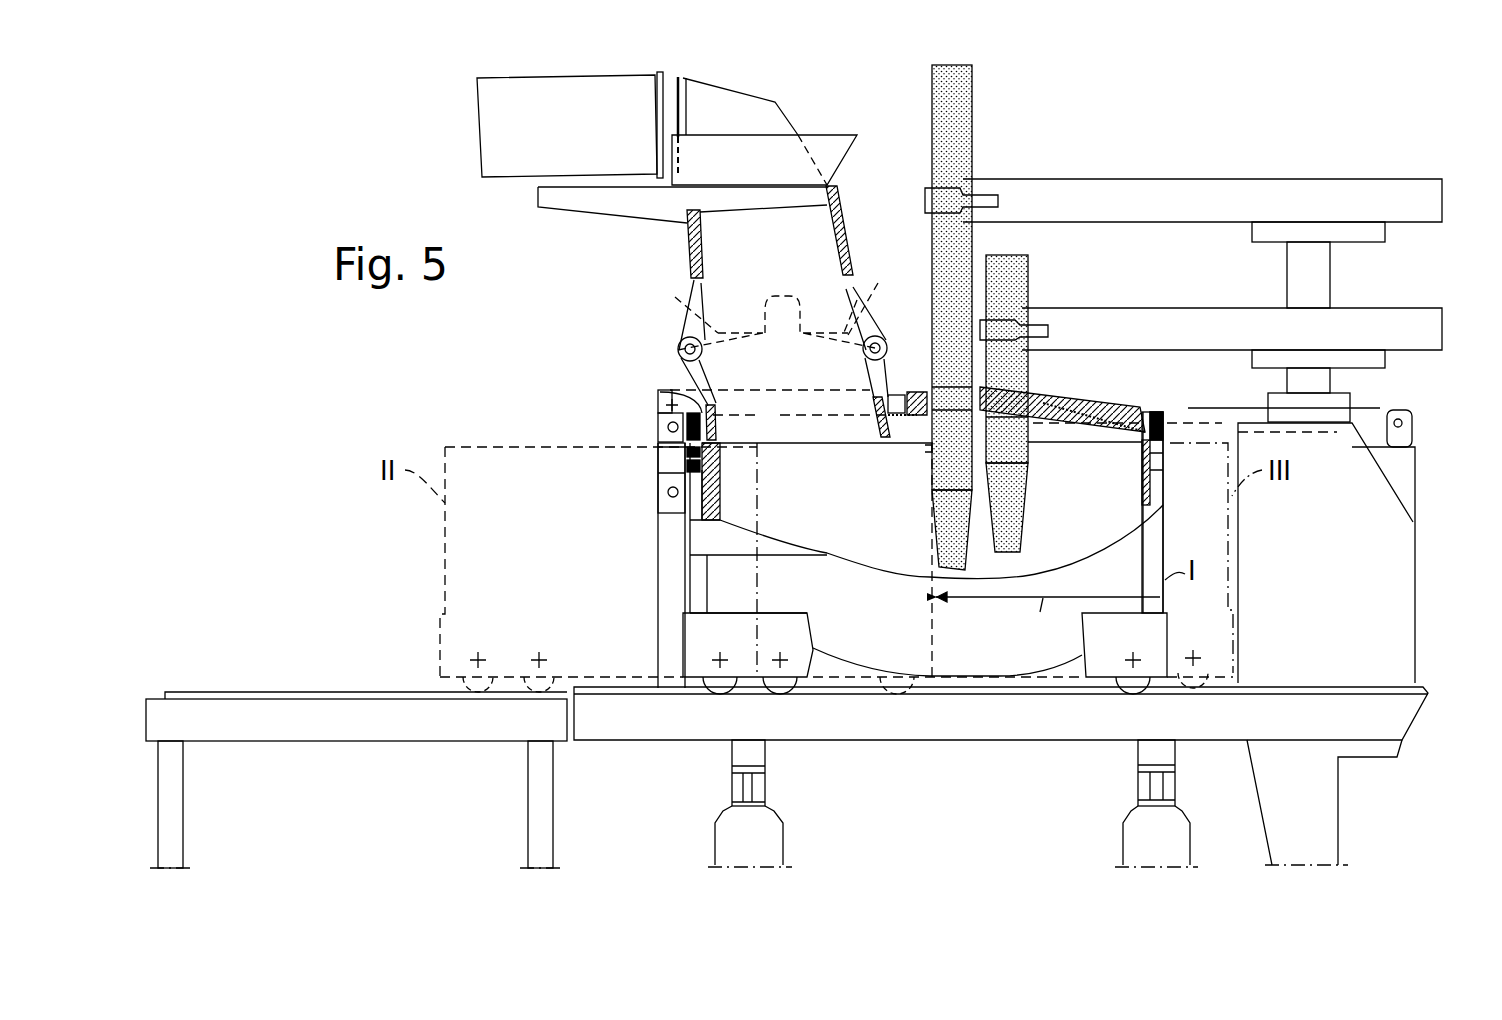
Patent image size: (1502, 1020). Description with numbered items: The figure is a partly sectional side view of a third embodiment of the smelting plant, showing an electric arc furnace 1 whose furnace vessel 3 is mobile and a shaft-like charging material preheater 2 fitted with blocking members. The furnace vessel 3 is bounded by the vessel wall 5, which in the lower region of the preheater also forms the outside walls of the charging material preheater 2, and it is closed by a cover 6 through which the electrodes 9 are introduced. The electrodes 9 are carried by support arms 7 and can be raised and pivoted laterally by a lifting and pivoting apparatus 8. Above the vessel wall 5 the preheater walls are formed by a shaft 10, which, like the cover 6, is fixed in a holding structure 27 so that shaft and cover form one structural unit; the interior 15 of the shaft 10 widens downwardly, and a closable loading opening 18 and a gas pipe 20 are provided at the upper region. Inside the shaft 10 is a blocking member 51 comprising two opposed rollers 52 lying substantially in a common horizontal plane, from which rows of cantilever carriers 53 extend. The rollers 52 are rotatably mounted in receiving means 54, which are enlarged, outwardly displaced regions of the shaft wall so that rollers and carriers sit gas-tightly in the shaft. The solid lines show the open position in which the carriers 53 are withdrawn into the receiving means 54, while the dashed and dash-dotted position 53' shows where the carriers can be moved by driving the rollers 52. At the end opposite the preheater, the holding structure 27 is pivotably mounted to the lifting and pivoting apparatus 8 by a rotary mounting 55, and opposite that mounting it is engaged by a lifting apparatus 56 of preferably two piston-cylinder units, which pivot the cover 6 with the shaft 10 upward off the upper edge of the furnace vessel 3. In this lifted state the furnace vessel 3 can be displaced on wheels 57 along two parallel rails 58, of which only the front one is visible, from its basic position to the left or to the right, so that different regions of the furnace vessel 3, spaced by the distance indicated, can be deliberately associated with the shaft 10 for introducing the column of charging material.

The electric arc furnace 1 is at (998, 688).
The charging material preheater 2 is at (682, 252).
The furnace vessel 3 is at (1168, 428).
The vessel wall 5 is at (699, 505).
The cover 6 is at (1104, 410).
The support arms 7 is at (1145, 196).
The lifting and pivoting apparatus 8 is at (1338, 291).
The electrodes 9 is at (975, 132).
The shaft 10 is at (837, 212).
The interior of the shaft 15 is at (820, 253).
The loading opening 18 is at (788, 182).
The gas pipe 20 is at (535, 94).
The holding structure 27 is at (656, 413).
The blocking member 51 is at (668, 344).
The rollers 52 is at (683, 350).
The cantilever carriers 53 is at (770, 304).
The carrier position 53' is at (785, 310).
The receiving means 54 is at (684, 377).
The rotary mounting 55 is at (1404, 415).
The lifting apparatus 56 is at (657, 470).
The wheels 57 is at (767, 688).
The rails 58 is at (333, 705).